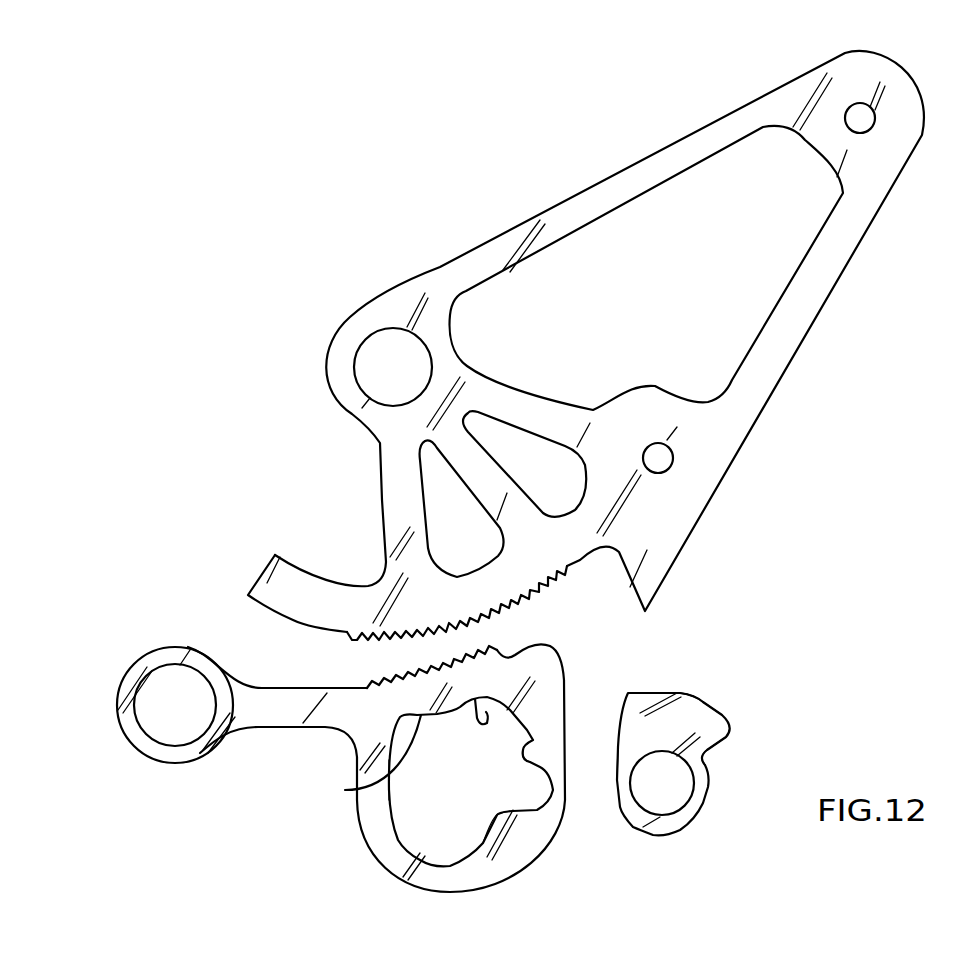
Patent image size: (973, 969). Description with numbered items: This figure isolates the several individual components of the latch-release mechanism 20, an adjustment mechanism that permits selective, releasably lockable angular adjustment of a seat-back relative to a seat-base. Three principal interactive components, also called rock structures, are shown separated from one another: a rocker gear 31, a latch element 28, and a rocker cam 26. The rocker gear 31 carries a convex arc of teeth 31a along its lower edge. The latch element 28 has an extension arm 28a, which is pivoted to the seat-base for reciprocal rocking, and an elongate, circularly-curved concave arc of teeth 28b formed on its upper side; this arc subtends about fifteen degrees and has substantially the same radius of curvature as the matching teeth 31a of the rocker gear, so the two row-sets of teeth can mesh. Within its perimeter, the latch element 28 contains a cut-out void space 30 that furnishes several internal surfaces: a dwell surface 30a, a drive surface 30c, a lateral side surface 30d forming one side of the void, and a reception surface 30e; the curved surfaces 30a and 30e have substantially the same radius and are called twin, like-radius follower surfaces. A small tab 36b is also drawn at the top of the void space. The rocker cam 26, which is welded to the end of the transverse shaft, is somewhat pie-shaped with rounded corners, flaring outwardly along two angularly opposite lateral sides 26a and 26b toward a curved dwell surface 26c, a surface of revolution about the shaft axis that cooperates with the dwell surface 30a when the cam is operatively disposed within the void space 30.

The latch-release mechanism 20 is at (331, 279).
The rocker gear 31 is at (808, 349).
The arc of teeth 31a is at (520, 617).
The latch element 28 is at (352, 828).
The extension arm 28a is at (288, 727).
The arc of teeth 28b is at (417, 673).
The cut-out void space 30 is at (426, 845).
The dwell surface 30a is at (357, 787).
The drive surface 30c is at (510, 808).
The lateral side surface 30d is at (397, 781).
The reception surface 30e is at (527, 745).
The hook tab 36b is at (465, 729).
The rocker cam 26 is at (687, 686).
The lateral side 26a is at (622, 726).
The lateral side 26b is at (728, 743).
The dwell surface 26c is at (720, 707).